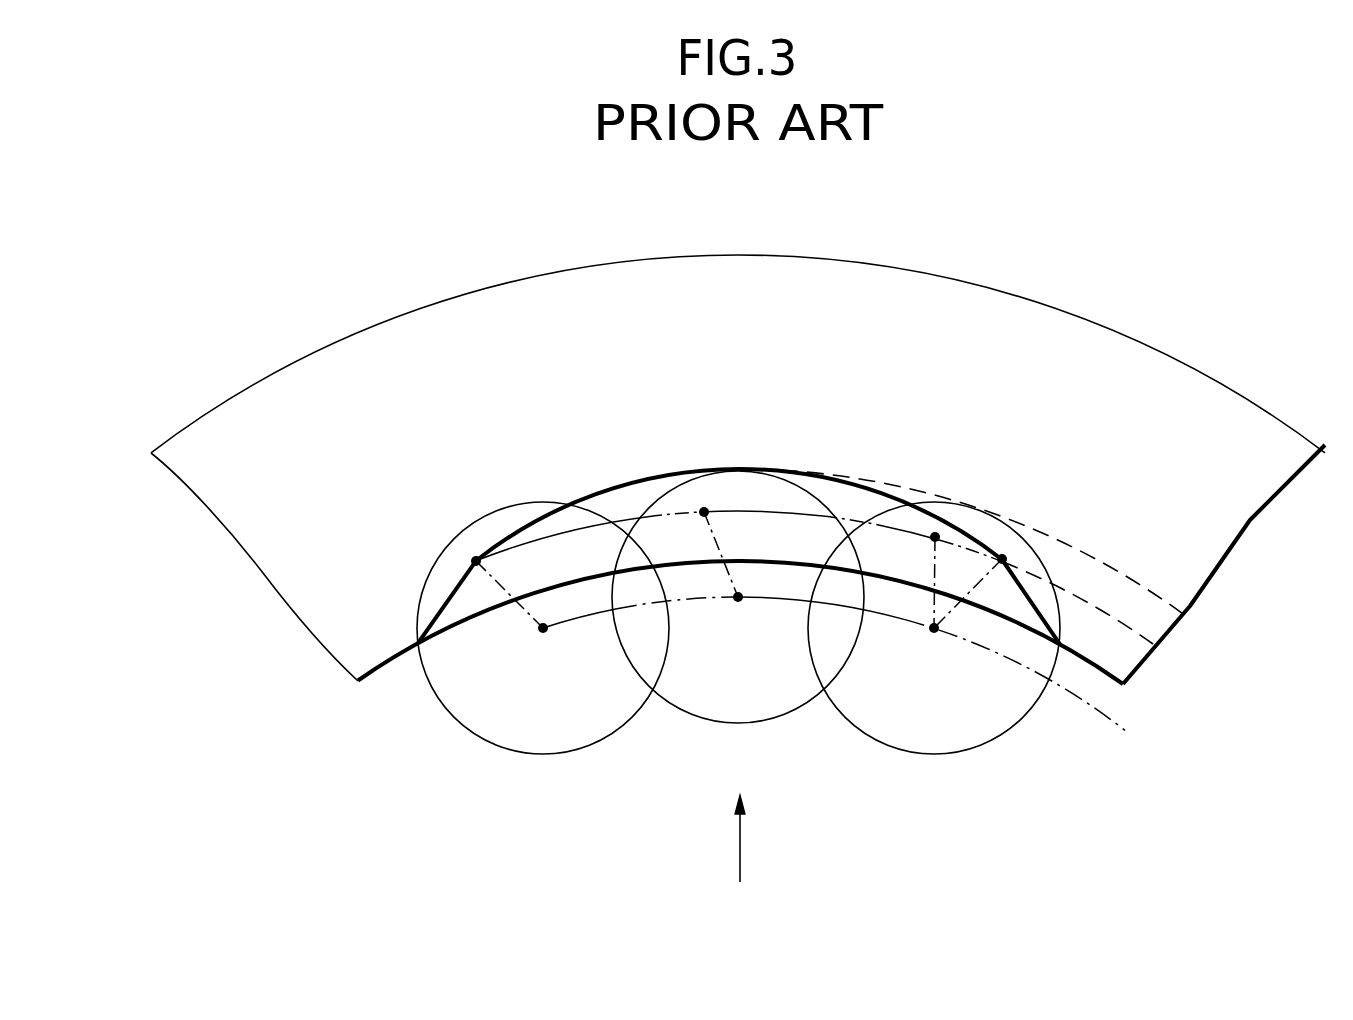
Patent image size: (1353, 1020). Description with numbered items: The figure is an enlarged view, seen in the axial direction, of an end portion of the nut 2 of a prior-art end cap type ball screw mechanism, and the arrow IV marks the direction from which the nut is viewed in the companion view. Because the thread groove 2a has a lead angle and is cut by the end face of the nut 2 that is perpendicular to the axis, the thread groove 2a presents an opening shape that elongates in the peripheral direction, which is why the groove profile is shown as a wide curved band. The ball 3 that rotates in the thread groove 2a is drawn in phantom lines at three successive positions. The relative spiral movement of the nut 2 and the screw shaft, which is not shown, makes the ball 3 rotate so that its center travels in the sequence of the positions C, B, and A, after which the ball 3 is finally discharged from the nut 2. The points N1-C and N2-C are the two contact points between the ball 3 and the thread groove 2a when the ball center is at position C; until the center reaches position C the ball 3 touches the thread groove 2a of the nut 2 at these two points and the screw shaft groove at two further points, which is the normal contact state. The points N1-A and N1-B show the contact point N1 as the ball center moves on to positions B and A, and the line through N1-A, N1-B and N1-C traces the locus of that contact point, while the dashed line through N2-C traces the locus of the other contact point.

The nut 2 is at (443, 322).
The thread groove 2a is at (832, 487).
The ball 3 is at (455, 722).
The position A is at (515, 618).
The position B is at (725, 575).
The position C is at (963, 602).
The contact point N1 at position A N1-A is at (476, 561).
The contact point N1 at position B N1-B is at (704, 512).
The contact point N1 at position C N1-C is at (935, 537).
The contact point N2 at position C N2-C is at (1002, 559).
The arrow IV is at (739, 857).